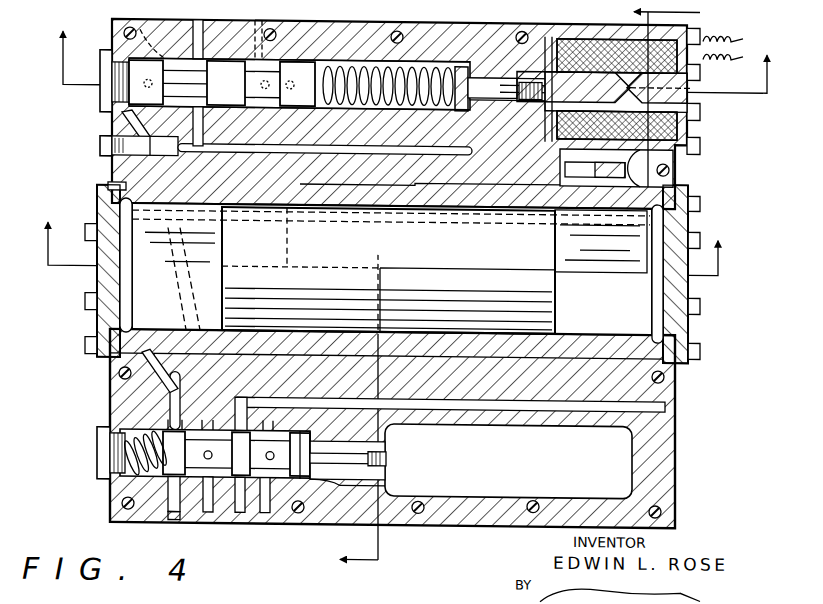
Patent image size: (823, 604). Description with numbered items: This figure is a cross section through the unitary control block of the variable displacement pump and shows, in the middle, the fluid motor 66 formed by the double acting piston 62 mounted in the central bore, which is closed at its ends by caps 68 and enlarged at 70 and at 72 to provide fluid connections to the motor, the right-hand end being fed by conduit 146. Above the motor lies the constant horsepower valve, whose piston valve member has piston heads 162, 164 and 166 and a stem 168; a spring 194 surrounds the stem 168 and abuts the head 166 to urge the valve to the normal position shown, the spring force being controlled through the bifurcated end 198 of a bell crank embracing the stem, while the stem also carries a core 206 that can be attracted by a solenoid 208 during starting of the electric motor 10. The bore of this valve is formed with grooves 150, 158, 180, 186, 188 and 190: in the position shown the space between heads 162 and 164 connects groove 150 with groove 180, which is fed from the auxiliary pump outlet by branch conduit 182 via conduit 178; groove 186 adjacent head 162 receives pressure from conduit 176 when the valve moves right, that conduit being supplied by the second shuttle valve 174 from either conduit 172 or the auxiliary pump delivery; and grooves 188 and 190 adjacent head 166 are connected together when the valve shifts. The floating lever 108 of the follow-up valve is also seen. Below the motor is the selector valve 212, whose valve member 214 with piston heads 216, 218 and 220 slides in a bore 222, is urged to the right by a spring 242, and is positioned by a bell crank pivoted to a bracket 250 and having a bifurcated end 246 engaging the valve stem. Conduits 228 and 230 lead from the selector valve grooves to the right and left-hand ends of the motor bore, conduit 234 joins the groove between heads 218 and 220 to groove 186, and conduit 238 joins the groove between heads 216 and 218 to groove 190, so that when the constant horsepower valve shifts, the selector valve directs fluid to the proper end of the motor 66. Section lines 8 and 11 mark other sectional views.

The groove 150 is at (162, 63).
The branch conduit 182 is at (184, 52).
The groove 188 is at (215, 42).
The groove 190 is at (270, 51).
The groove 158 is at (318, 61).
The spring 194 is at (378, 61).
The bifurcated end 198 is at (462, 65).
The stem 168 is at (490, 83).
The solenoid 208 is at (612, 55).
The core 206 is at (680, 97).
The section line 11- 11 is at (520, 289).
The electric motor 10 is at (415, 53).
The groove 186 is at (111, 57).
The conduit 176 is at (125, 123).
The second shuttle valve 174 is at (118, 151).
The piston head 162 is at (146, 82).
The piston head 164 is at (238, 83).
The groove 180 is at (221, 86).
The piston head 166 is at (297, 84).
The floating lever 108 is at (588, 167).
The section line 8- 8 is at (379, 238).
The fluid motor 66 is at (260, 255).
The conduit 238 is at (290, 250).
The conduit 178 is at (330, 154).
The conduit 172 is at (455, 222).
The conduit 234 is at (178, 302).
The enlarged bore portion 72 is at (134, 316).
The cap 68 is at (103, 326).
The conduit 230 is at (150, 347).
The double acting piston 62 is at (558, 283).
The enlarged bore portion 70 is at (652, 289).
The conduit 146 is at (660, 315).
The piston head 220 is at (165, 434).
The spring 242 is at (145, 473).
The selector valve 212 is at (190, 482).
The piston head 218 is at (243, 482).
The valve member 214 is at (276, 482).
The piston head 216 is at (306, 447).
The bracket 250 is at (388, 441).
The bifurcated end 246 is at (392, 462).
The bore 222 is at (345, 482).
The conduit 228 is at (527, 413).